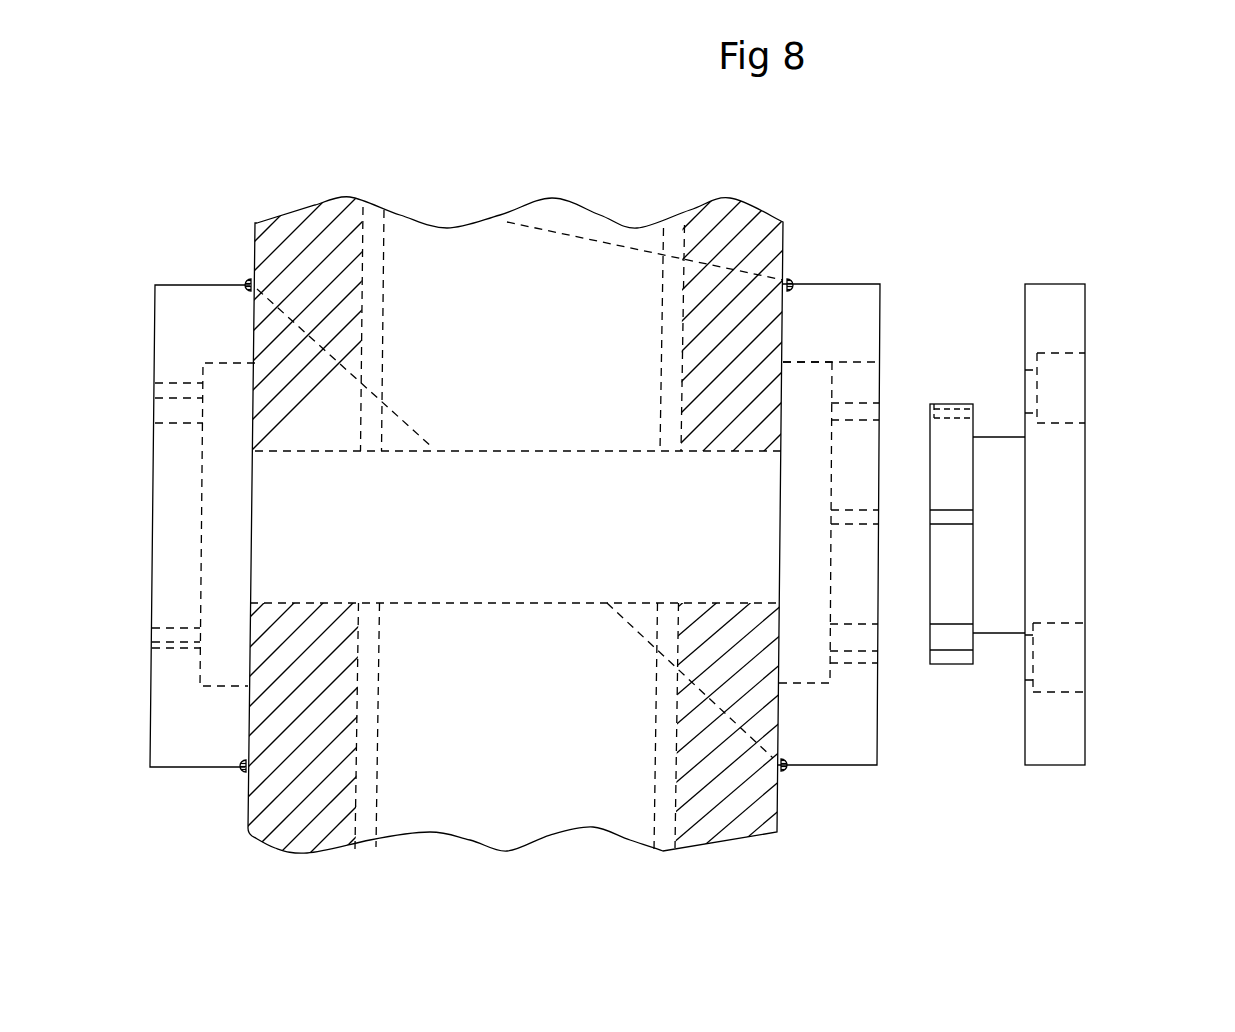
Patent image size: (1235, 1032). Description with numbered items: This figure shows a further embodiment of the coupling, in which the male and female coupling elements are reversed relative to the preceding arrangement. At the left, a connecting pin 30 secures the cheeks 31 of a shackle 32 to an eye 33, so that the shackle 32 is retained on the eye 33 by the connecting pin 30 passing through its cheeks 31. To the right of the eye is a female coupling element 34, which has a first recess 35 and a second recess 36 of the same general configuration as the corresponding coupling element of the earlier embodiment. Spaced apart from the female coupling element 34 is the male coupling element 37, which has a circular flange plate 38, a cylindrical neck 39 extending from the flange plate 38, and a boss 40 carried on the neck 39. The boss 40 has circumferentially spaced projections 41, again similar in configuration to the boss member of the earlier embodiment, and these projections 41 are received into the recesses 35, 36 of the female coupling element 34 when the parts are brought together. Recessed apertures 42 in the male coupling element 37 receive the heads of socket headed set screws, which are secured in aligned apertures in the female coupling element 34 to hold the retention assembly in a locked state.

The connecting pin 30 is at (417, 570).
The cheeks 31 is at (745, 207).
The shackle 32 is at (317, 205).
The eye 33 is at (552, 222).
The female coupling element 34 is at (835, 307).
The first recess 35 is at (847, 448).
The second recess 36 is at (806, 403).
The male coupling element 37 is at (1087, 290).
The circular flange plate 38 is at (1068, 338).
The cylindrical neck 39 is at (999, 613).
The boss 40 is at (952, 586).
The circumferentially spaced projections 41 is at (950, 460).
The recessed apertures 42 is at (1063, 392).